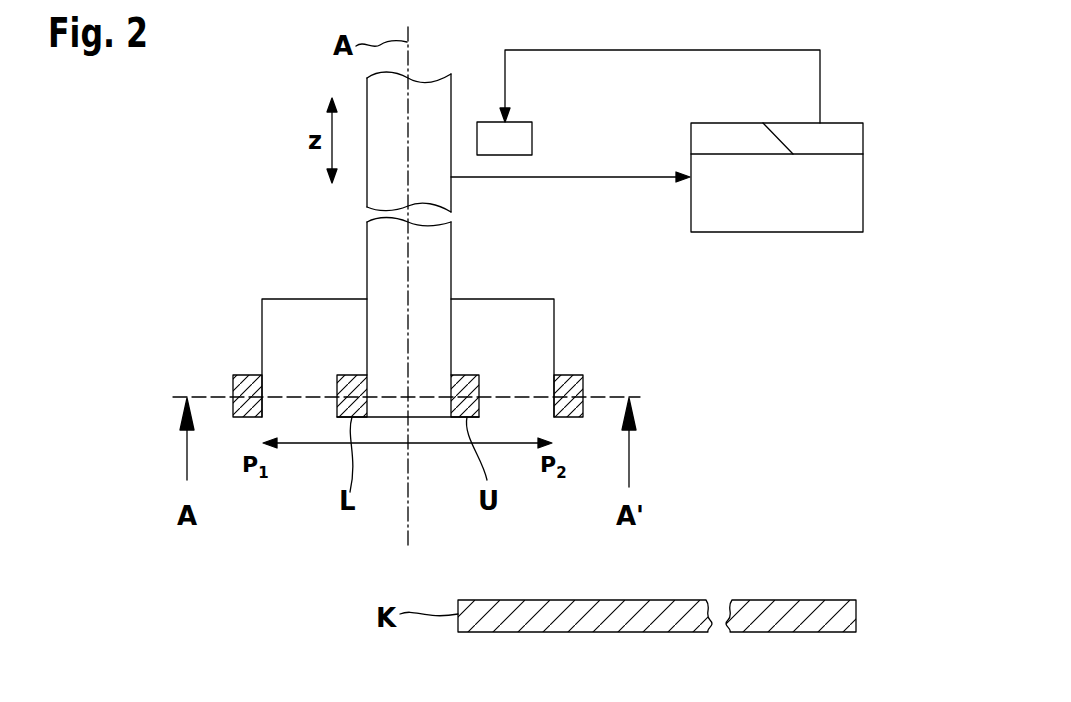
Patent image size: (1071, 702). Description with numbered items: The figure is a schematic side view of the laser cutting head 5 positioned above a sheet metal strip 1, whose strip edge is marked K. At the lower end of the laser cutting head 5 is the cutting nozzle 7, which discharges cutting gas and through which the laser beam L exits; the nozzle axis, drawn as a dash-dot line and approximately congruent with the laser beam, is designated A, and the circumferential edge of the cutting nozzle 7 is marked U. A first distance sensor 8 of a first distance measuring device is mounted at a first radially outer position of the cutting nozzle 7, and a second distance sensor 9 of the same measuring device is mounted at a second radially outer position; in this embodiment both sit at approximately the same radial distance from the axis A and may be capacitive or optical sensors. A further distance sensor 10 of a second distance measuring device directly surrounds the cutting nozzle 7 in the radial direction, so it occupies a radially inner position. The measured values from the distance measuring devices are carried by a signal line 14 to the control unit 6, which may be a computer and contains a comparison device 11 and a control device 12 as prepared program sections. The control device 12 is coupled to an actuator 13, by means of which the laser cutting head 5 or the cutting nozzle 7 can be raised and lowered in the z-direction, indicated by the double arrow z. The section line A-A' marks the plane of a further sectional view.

The sheet metal strip 1 is at (577, 612).
The laser cutting head 5 is at (406, 284).
The control unit 6 is at (778, 185).
The cutting nozzle 7 is at (451, 330).
The first distance sensor 8 is at (238, 384).
The second distance sensor 9 is at (572, 384).
The further distance sensor 10 is at (344, 384).
The comparison device 11 is at (690, 137).
The control device 12 is at (865, 137).
The actuator 13 is at (533, 138).
The signal line 14 is at (575, 180).